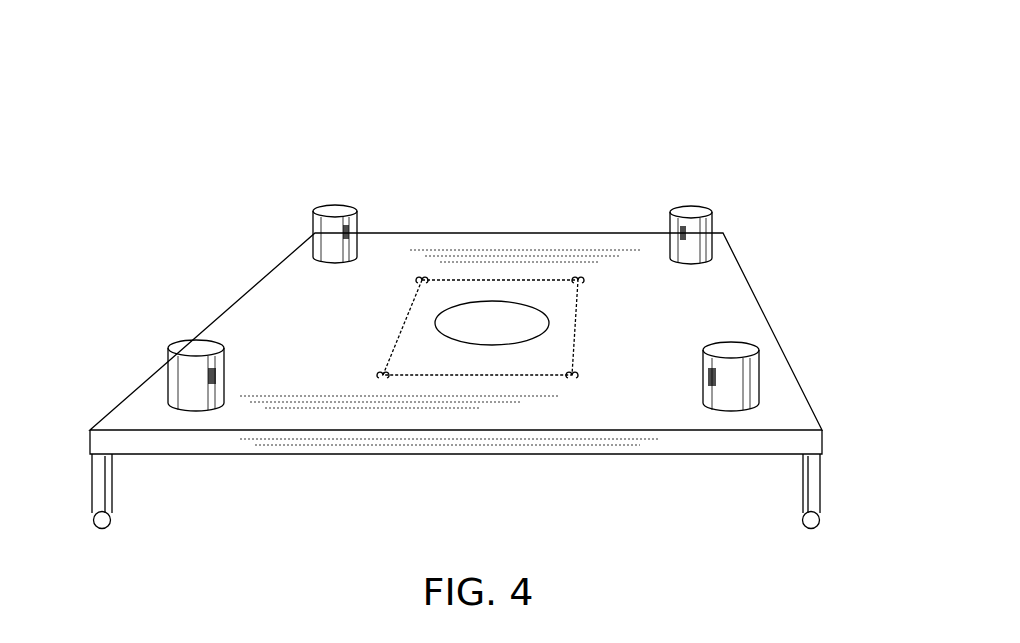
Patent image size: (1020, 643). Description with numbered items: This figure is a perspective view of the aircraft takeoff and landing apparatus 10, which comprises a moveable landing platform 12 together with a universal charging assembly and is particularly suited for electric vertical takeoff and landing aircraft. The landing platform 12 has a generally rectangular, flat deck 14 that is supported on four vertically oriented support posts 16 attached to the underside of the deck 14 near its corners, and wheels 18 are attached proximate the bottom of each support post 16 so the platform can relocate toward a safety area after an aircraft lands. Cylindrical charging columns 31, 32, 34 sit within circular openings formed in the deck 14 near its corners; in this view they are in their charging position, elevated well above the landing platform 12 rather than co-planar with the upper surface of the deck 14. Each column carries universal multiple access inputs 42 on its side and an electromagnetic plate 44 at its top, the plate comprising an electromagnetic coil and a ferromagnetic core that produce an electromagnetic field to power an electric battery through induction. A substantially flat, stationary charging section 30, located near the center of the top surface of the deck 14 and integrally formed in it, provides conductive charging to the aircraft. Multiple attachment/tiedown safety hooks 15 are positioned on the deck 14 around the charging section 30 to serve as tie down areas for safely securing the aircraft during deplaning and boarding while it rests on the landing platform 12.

The aircraft takeoff and landing apparatus 10 is at (198, 92).
The landing platform 12 is at (236, 291).
The deck 14 is at (722, 282).
The safety hooks 15 is at (422, 278).
The support posts 16 is at (98, 492).
The wheels 18 is at (110, 517).
The charging section 30 is at (537, 328).
The charging column 31 is at (748, 378).
The charging column 32 is at (178, 378).
The charging column 34 is at (315, 240).
The universal multiple access inputs 42 is at (358, 238).
The electromagnetic plate 44 is at (333, 212).